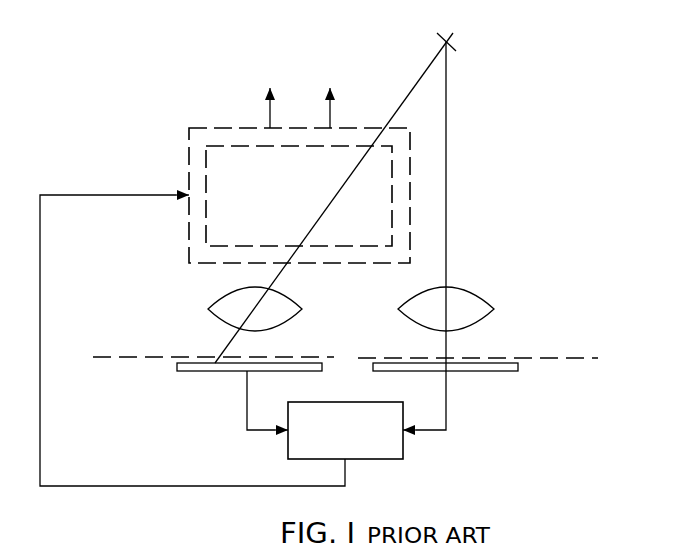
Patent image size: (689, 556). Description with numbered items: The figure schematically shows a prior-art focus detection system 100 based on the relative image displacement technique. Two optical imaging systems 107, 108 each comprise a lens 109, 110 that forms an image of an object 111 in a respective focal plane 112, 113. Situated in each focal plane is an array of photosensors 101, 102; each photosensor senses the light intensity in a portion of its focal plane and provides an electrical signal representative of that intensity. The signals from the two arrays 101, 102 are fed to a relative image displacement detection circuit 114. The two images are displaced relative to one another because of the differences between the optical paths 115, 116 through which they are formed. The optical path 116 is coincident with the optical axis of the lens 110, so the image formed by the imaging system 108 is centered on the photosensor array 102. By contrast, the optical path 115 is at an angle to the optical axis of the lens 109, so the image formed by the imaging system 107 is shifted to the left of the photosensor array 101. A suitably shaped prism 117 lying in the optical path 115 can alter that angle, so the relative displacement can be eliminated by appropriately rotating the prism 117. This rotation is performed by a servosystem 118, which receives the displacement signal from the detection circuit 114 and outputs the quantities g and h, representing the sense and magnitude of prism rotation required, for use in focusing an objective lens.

The focus detection system 100 is at (386, 108).
The array of photosensors 101 is at (197, 372).
The array of photosensors 102 is at (490, 372).
The optical imaging system 107 is at (261, 351).
The optical imaging system 108 is at (458, 348).
The lens 109 is at (287, 295).
The lens 110 is at (477, 293).
The object 111 is at (455, 32).
The focal plane 112 is at (108, 355).
The focal plane 113 is at (587, 358).
The relative image displacement detection circuit 114 is at (402, 445).
The optical path 115 is at (272, 275).
The optical path 116 is at (446, 187).
The prism 117 is at (205, 232).
The servosystem 118 is at (188, 157).